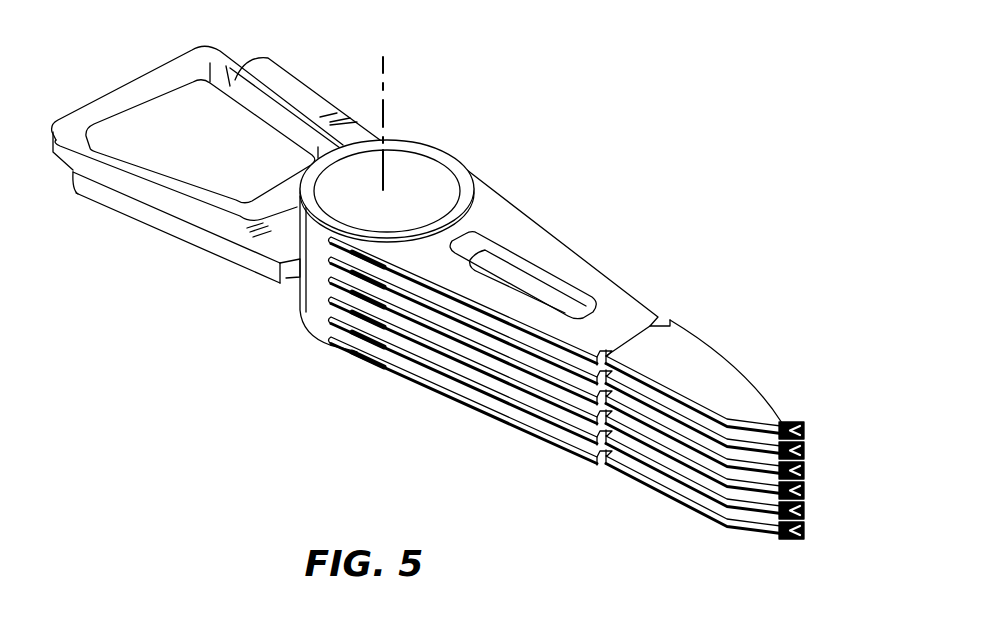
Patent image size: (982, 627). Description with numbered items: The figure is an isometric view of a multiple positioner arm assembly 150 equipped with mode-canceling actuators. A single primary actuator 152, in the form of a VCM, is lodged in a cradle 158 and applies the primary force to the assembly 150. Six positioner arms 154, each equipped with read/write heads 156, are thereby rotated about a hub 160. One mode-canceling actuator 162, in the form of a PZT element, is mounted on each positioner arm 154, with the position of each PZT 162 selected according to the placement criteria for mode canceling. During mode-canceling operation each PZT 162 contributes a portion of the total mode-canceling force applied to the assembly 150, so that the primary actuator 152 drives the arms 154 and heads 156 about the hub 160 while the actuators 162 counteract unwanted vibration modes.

The multiple positioner arm assembly 150 is at (456, 273).
The primary actuator 152 is at (150, 72).
The positioner arms 154 is at (560, 243).
The read/write heads 156 is at (789, 422).
The cradle 158 is at (162, 231).
The hub 160 is at (423, 163).
The mode-canceling actuator 162 is at (355, 352).